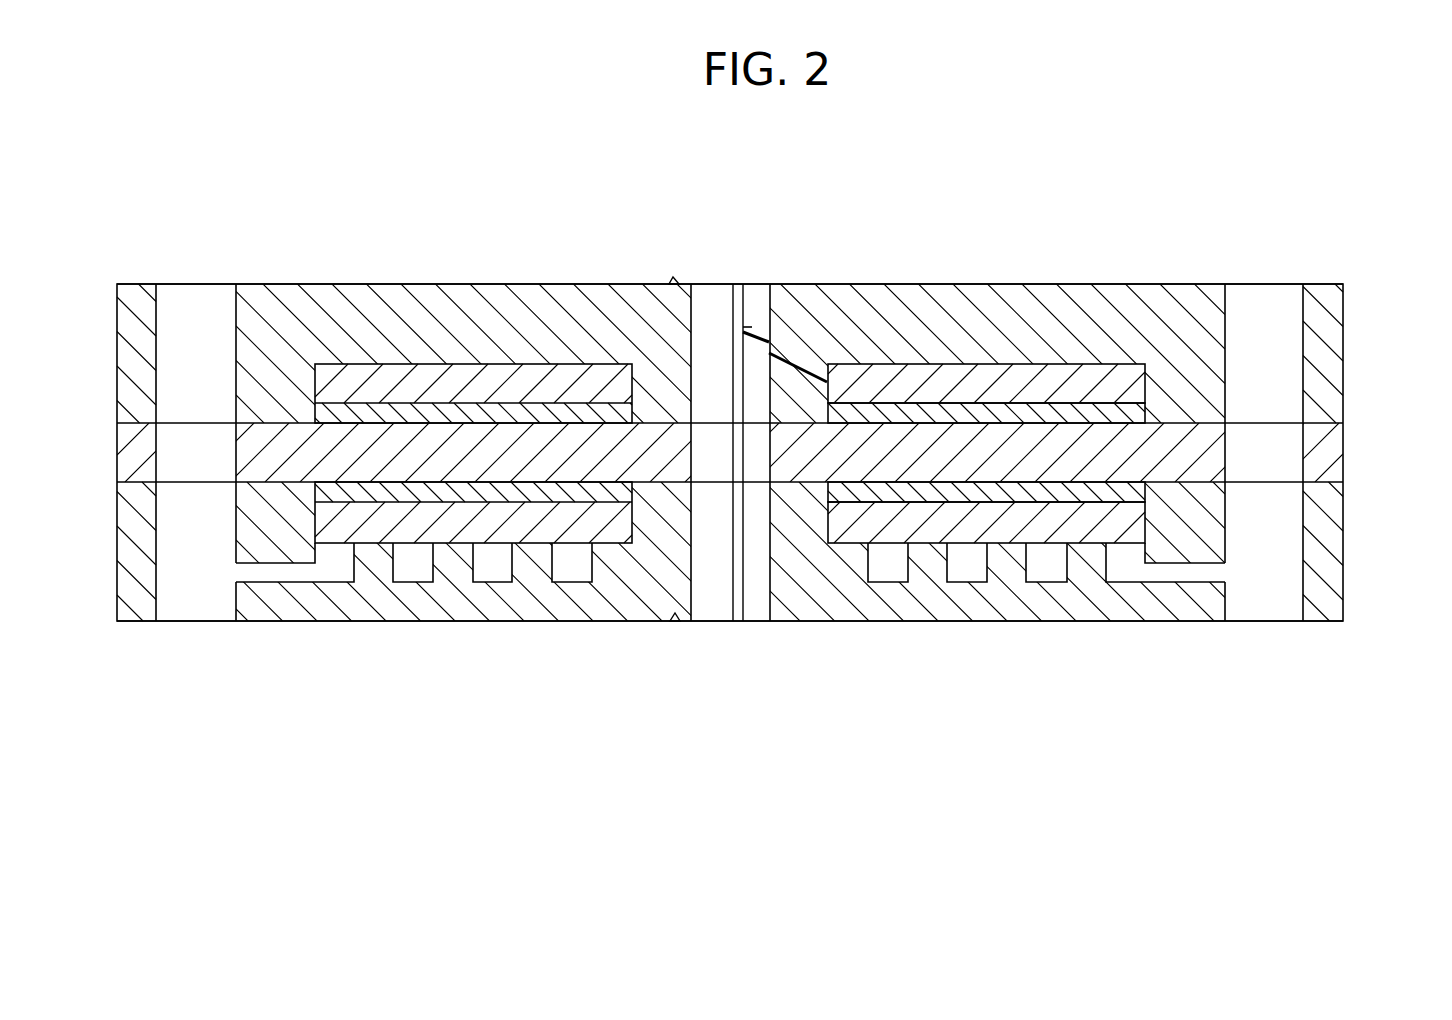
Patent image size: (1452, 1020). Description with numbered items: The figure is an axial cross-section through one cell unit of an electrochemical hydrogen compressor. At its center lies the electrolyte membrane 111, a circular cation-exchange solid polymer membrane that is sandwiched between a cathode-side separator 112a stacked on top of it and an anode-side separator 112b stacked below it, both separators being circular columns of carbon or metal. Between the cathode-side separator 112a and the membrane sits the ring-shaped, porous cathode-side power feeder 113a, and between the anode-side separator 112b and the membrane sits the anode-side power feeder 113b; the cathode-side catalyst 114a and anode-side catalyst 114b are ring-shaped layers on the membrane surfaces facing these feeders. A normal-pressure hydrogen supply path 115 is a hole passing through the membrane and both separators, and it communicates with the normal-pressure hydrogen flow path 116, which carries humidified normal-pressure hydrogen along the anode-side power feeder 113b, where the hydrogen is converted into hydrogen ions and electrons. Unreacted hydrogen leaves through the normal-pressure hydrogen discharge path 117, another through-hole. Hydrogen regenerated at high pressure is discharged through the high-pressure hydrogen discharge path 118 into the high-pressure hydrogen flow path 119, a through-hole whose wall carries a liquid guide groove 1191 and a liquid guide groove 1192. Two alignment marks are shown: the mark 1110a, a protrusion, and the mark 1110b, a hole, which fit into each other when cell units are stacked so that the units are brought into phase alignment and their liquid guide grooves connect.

The electrolyte membrane 111 is at (1323, 452).
The cathode-side separator 112a is at (1323, 353).
The anode-side separator 112b is at (1323, 548).
The cathode-side power feeder 113a is at (930, 378).
The anode-side power feeder 113b is at (930, 535).
The cathode-side catalyst 114a is at (1085, 415).
The anode-side catalyst 114b is at (1085, 493).
The normal-pressure hydrogen supply path 115 is at (1266, 600).
The normal-pressure hydrogen flow path 116 is at (888, 570).
The normal-pressure hydrogen discharge path 117 is at (194, 600).
The high-pressure hydrogen discharge path 118 is at (798, 358).
The high-pressure hydrogen flow path 119 is at (702, 600).
The liquid guide groove 1191 is at (740, 600).
The liquid guide groove 1192 is at (748, 325).
The mark 1110a is at (673, 277).
The mark 1110b is at (672, 621).